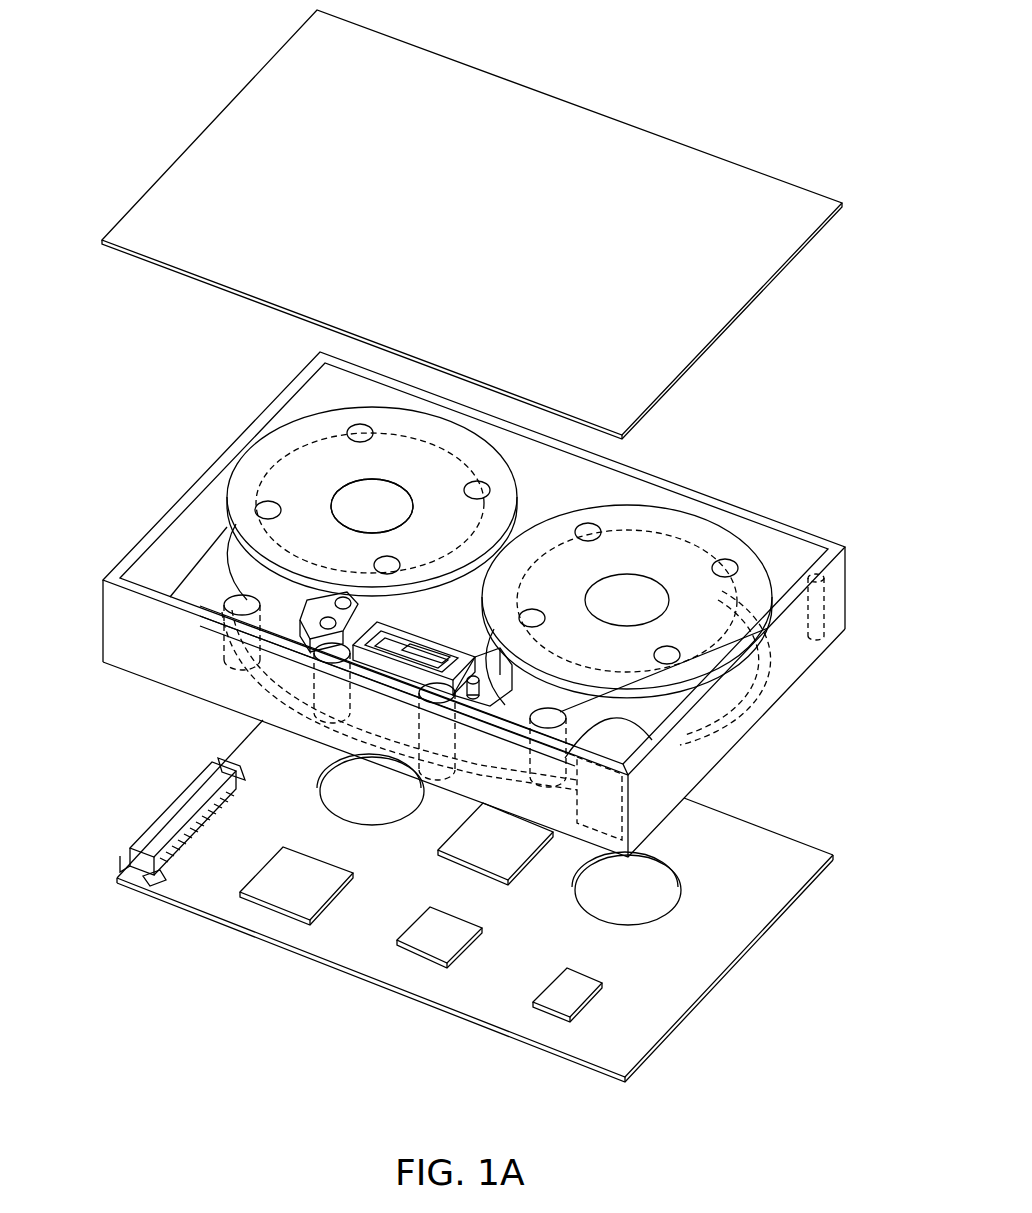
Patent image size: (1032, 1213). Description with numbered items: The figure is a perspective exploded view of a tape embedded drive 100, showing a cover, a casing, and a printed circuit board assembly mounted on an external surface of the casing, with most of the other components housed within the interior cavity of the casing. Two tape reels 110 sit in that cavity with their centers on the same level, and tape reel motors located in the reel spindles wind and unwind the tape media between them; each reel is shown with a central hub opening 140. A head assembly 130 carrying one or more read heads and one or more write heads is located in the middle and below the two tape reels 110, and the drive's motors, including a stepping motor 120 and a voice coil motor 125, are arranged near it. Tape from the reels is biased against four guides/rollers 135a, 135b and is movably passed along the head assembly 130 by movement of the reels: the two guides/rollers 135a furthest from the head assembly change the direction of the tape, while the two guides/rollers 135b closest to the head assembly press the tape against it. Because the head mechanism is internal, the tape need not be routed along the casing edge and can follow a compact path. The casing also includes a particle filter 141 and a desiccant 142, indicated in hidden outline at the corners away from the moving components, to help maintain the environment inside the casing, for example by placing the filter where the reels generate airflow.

The tape embedded drive 100 is at (745, 80).
The tape reels 110 is at (420, 417).
The stepping motor 120 is at (295, 622).
The voice coil motor 125 is at (393, 615).
The head assembly 130 is at (391, 650).
The guides/rollers 135a is at (237, 602).
The guides/rollers 135b is at (322, 645).
The spindle hole 140 is at (343, 488).
The particle filters 141 is at (823, 608).
The desiccants 142 is at (640, 795).